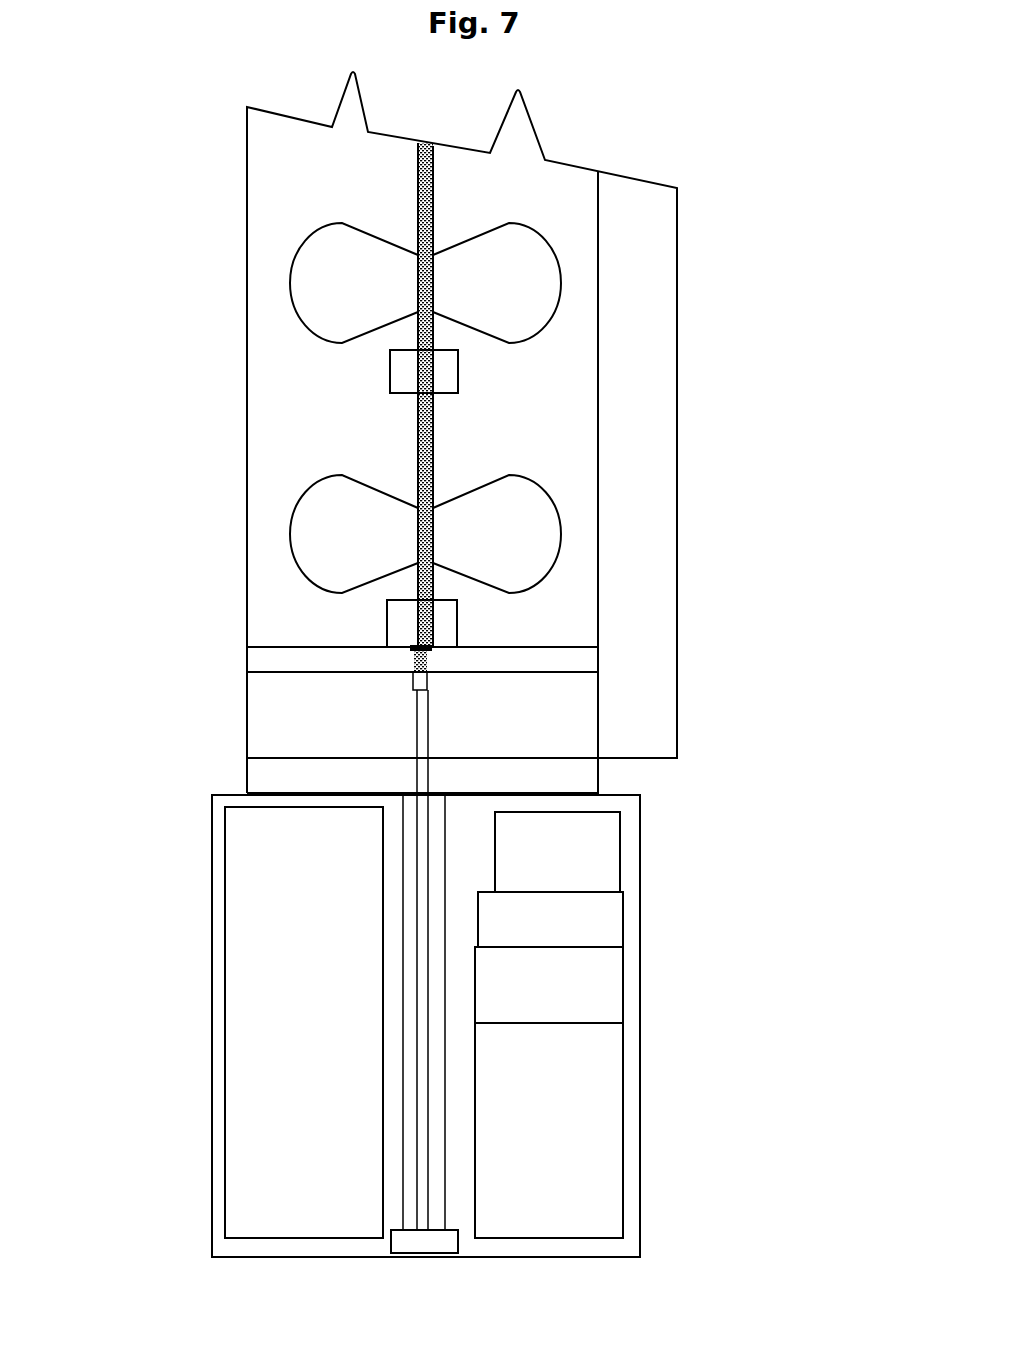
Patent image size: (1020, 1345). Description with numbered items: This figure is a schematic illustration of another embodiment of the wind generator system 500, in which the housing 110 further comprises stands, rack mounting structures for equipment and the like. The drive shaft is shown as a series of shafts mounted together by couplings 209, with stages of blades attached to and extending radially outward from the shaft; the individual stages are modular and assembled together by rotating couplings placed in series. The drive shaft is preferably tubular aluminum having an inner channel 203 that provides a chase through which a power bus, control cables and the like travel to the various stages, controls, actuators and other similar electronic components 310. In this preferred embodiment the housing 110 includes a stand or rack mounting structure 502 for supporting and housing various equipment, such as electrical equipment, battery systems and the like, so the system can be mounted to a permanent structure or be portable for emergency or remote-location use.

The wind generator system 500 is at (742, 204).
The housing 110 is at (222, 380).
The inner channel 203 is at (430, 578).
The couplings 209 is at (432, 452).
The electronic components 310 is at (665, 873).
The rack mounting structure 502 is at (630, 934).